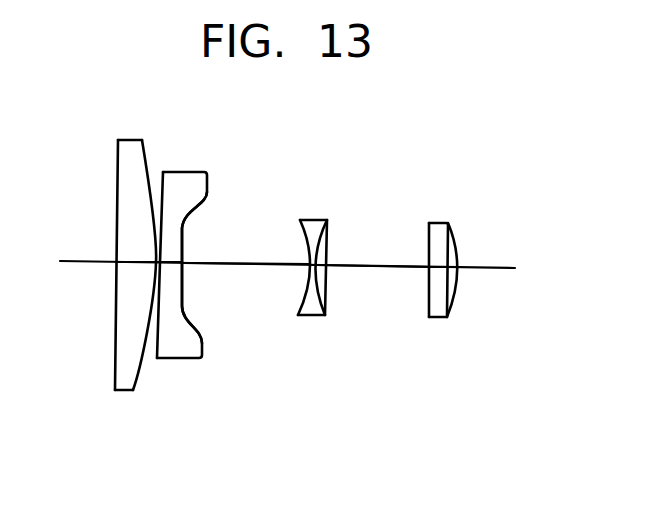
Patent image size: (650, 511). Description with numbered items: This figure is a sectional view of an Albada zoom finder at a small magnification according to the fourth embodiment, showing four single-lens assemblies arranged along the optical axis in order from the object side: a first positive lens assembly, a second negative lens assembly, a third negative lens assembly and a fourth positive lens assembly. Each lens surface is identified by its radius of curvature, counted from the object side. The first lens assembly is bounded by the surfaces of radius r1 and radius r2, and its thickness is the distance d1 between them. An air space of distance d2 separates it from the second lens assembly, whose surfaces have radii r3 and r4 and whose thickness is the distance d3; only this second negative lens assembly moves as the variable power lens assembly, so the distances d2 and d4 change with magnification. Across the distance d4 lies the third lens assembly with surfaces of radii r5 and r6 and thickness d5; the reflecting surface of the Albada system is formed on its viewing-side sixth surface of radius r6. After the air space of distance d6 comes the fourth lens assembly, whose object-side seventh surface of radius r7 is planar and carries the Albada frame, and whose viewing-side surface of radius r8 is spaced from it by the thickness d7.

The radius of curvature of first lens surface r1 is at (118, 188).
The radius of curvature of second lens surface r2 is at (148, 167).
The radius of curvature of third lens surface r3 is at (159, 185).
The radius of curvature of fourth lens surface r4 is at (187, 222).
The radius of curvature of fifth lens surface r5 is at (303, 238).
The radius of curvature of sixth lens surface r6 is at (327, 247).
The radius of curvature of seventh lens surface r7 is at (427, 243).
The radius of curvature of eighth lens surface r8 is at (457, 250).
The distance between first and second lens surfaces d1 is at (143, 268).
The distance between second and third lens surfaces d2 is at (160, 268).
The distance between third and fourth lens surfaces d3 is at (183, 305).
The distance between fourth and fifth lens surfaces d4 is at (255, 268).
The distance between fifth and sixth lens surfaces d5 is at (319, 318).
The distance between sixth and seventh lens surfaces d6 is at (387, 273).
The distance between seventh and eighth lens surfaces d7 is at (442, 271).